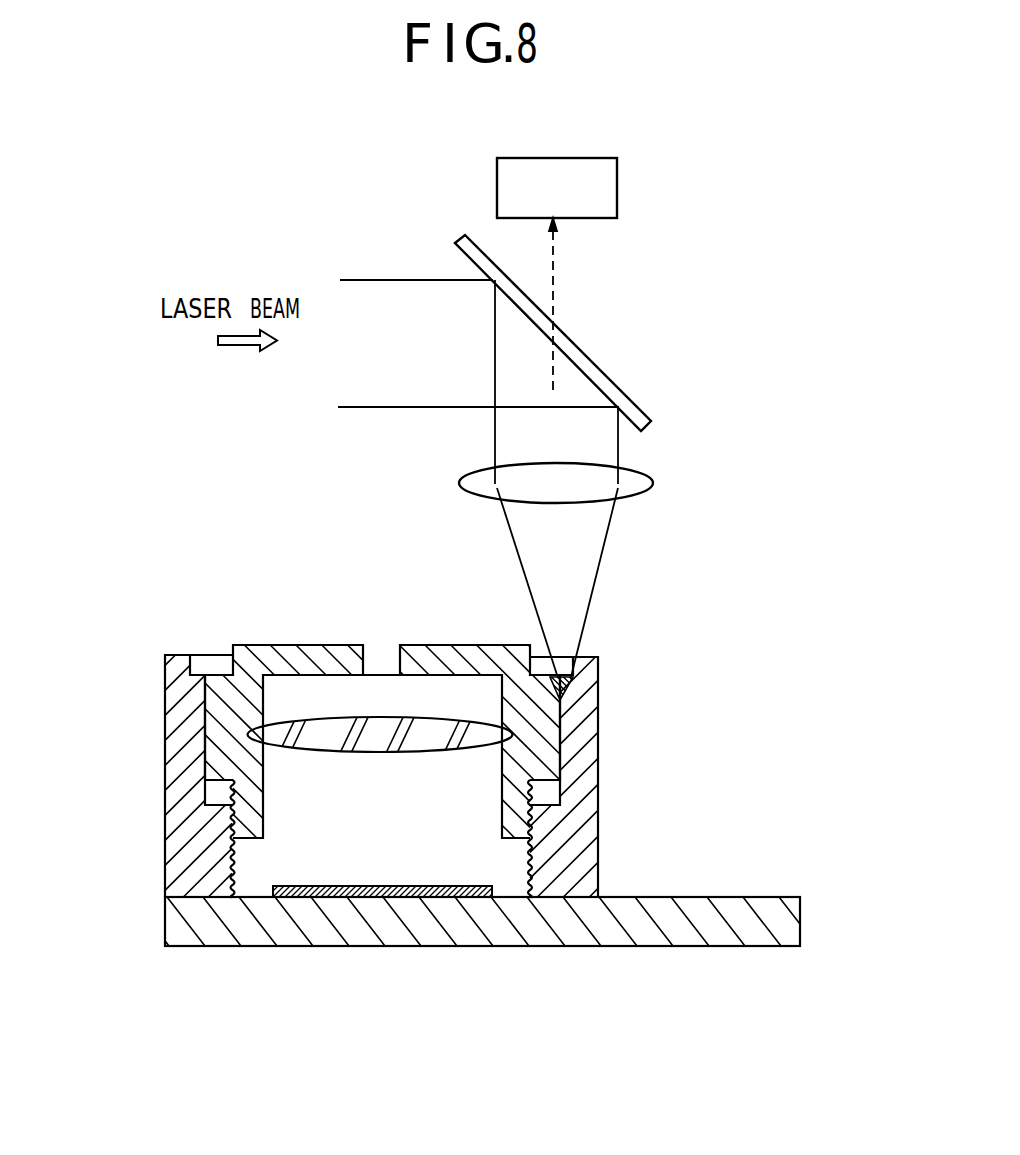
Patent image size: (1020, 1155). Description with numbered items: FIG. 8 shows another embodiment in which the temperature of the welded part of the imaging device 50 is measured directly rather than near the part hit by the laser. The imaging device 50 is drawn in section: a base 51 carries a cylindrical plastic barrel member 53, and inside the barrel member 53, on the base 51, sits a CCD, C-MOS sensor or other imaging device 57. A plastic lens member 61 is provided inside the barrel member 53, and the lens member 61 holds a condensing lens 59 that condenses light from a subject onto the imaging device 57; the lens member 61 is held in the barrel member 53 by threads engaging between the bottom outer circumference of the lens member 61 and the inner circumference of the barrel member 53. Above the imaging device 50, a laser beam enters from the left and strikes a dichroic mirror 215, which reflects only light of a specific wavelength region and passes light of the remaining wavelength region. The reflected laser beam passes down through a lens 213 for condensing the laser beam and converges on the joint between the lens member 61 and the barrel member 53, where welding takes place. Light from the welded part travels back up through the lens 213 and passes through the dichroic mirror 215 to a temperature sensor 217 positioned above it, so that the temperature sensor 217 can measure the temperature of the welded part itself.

The imaging device 50 is at (171, 638).
The base 51 is at (700, 898).
The barrel member 53 is at (165, 760).
The imaging device 57 is at (388, 897).
The condensing lens 59 is at (500, 738).
The lens member 61 is at (253, 680).
The lens 213 is at (635, 498).
The dichroic mirror 215 is at (616, 384).
The temperature sensor 217 is at (569, 158).